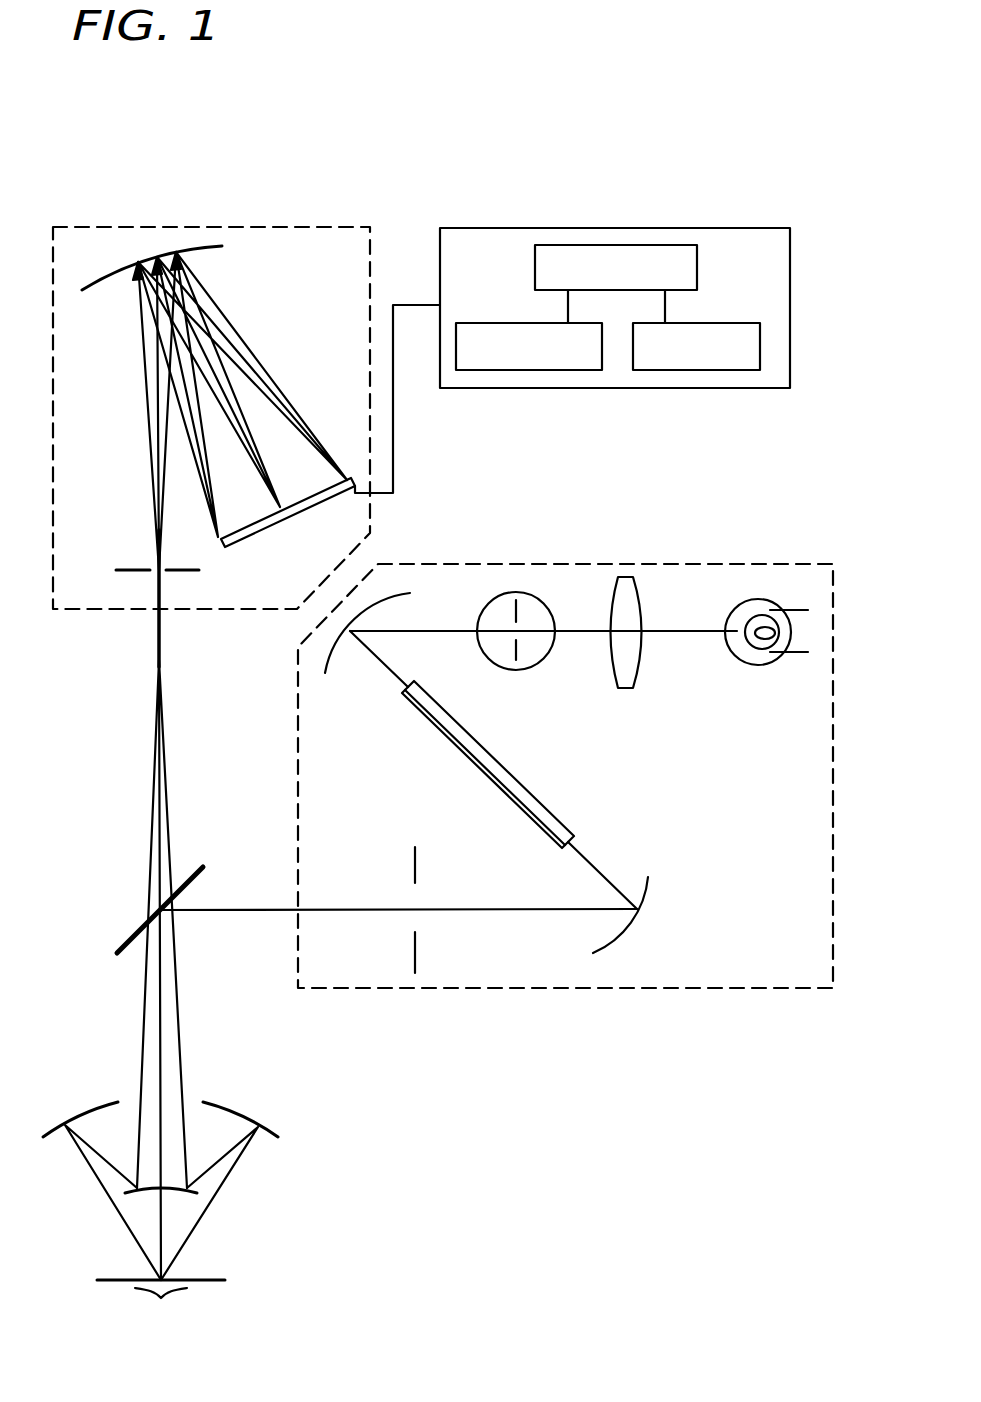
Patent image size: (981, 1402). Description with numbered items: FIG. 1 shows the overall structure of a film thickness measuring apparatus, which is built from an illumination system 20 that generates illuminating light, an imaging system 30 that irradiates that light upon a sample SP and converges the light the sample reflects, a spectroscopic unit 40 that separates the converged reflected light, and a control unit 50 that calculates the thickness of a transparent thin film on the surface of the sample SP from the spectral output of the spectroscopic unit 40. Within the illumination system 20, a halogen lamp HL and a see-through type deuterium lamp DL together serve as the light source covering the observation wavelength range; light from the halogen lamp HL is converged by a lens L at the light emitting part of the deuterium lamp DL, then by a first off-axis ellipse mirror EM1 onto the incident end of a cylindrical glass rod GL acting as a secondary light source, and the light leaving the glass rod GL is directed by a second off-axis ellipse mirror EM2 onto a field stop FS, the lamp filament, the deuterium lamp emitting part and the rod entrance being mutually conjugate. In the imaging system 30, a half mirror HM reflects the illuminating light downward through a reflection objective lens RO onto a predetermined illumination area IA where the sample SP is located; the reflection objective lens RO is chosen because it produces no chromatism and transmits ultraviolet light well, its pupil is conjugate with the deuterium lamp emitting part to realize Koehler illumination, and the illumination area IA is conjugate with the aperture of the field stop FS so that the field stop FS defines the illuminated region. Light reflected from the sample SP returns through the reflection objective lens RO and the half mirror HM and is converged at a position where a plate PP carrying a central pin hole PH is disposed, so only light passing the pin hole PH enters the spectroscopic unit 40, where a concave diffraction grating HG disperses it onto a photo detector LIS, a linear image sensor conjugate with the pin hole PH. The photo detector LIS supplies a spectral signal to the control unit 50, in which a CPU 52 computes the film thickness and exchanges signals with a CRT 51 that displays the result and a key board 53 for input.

The spectroscopic unit 40 is at (302, 226).
The concave diffraction grating HG is at (193, 248).
The photo detector LIS is at (267, 530).
The pin hole PH is at (152, 568).
The plate PP is at (183, 572).
The control unit 50 is at (730, 228).
The CPU 52 is at (608, 245).
The key board 53 is at (538, 372).
The CRT 51 is at (712, 372).
The illumination system 20 is at (735, 990).
The first off-axis ellipse mirror EM1 is at (338, 650).
The see-through type deuterium lamp DL is at (533, 667).
The lens L is at (640, 662).
The halogen lamp HL is at (765, 665).
The cylindrical glass rod GL is at (552, 810).
The second off-axis ellipse mirror EM2 is at (600, 946).
The field stop FS is at (417, 950).
The half mirror HM is at (203, 868).
The imaging system 30 is at (214, 970).
The reflection objective lens RO is at (268, 1127).
The sample SP is at (200, 1278).
The illumination area IA is at (161, 1316).